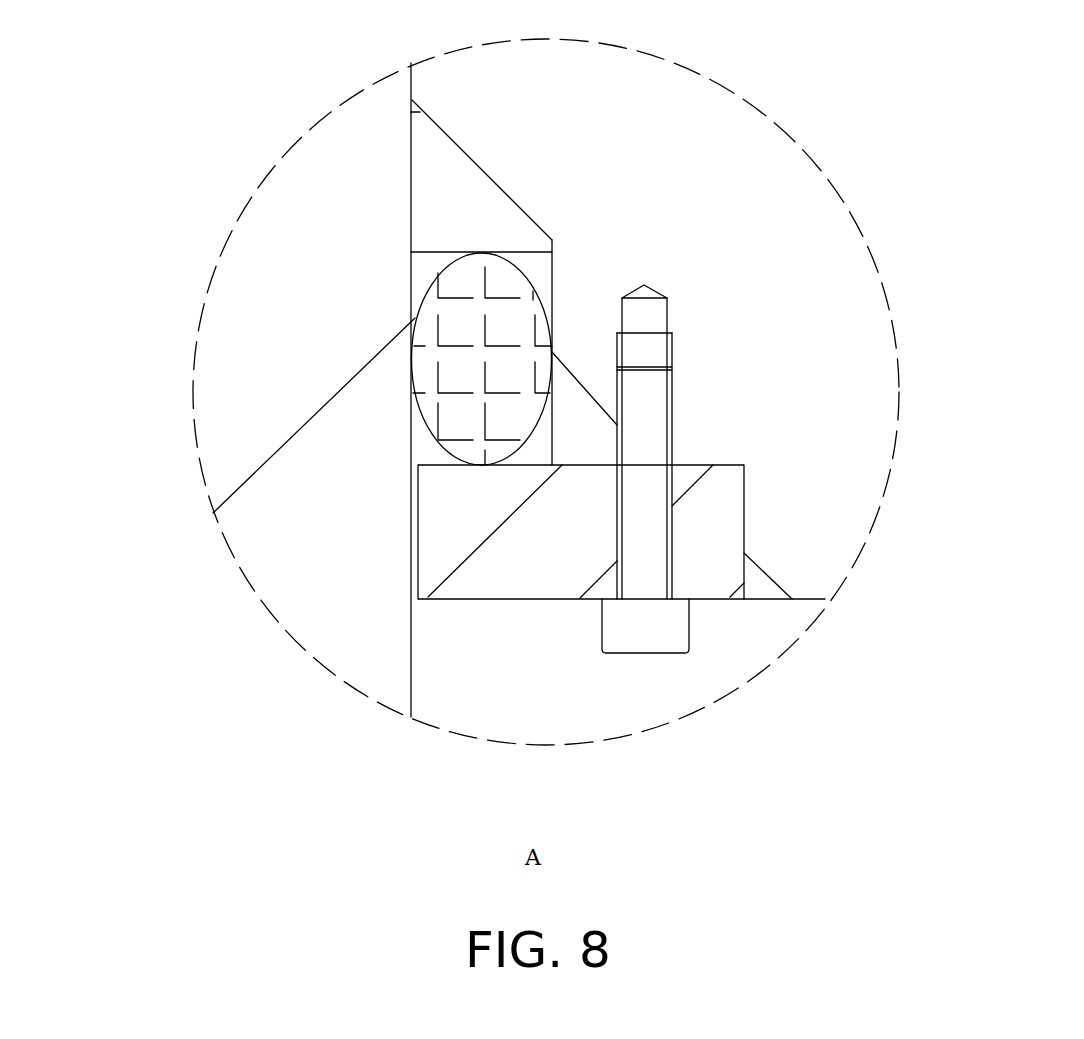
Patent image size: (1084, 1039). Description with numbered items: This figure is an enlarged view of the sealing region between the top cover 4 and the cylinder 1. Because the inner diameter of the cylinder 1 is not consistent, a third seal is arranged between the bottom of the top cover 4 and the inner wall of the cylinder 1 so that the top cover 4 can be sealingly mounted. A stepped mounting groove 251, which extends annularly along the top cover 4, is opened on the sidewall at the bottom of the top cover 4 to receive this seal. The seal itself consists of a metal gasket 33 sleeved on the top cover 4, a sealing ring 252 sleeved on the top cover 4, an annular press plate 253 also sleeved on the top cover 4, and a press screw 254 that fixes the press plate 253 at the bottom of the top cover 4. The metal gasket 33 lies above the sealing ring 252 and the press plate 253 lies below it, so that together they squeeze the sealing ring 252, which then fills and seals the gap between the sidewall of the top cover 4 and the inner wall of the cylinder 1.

The cylinder 1 is at (283, 572).
The top cover 4 is at (775, 168).
The metal gasket 33 is at (438, 173).
The mounting groove 251 is at (423, 270).
The sealing ring 252 is at (430, 354).
The press plate 253 is at (485, 583).
The press screw 254 is at (650, 635).